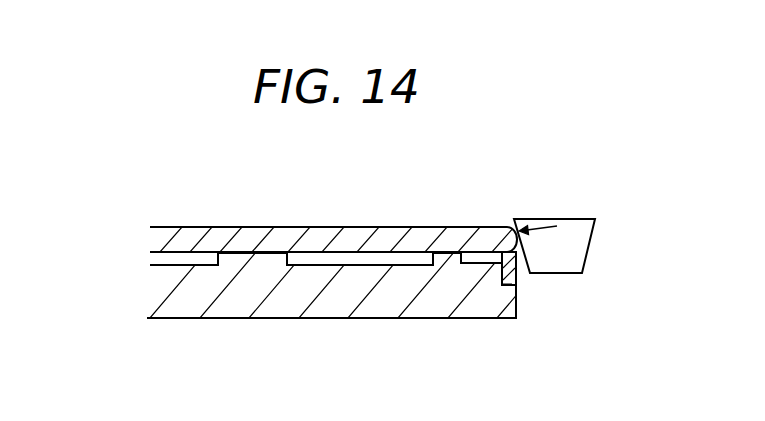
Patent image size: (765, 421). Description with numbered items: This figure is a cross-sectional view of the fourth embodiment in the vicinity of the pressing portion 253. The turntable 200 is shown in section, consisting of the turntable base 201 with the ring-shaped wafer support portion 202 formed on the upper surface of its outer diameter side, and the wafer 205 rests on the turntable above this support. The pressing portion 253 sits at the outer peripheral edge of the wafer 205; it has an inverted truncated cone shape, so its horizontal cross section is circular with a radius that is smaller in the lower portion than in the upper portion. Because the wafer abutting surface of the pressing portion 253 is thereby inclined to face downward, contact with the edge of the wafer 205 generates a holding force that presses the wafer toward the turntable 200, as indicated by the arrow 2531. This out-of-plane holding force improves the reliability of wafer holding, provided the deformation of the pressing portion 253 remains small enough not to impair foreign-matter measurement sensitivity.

The turntable 200 is at (138, 253).
The turntable base 201 is at (366, 304).
The wafer support portion 202 is at (512, 271).
The wafer 205 is at (192, 227).
The pressing portion 253 is at (569, 232).
The arrow 2531 is at (546, 226).